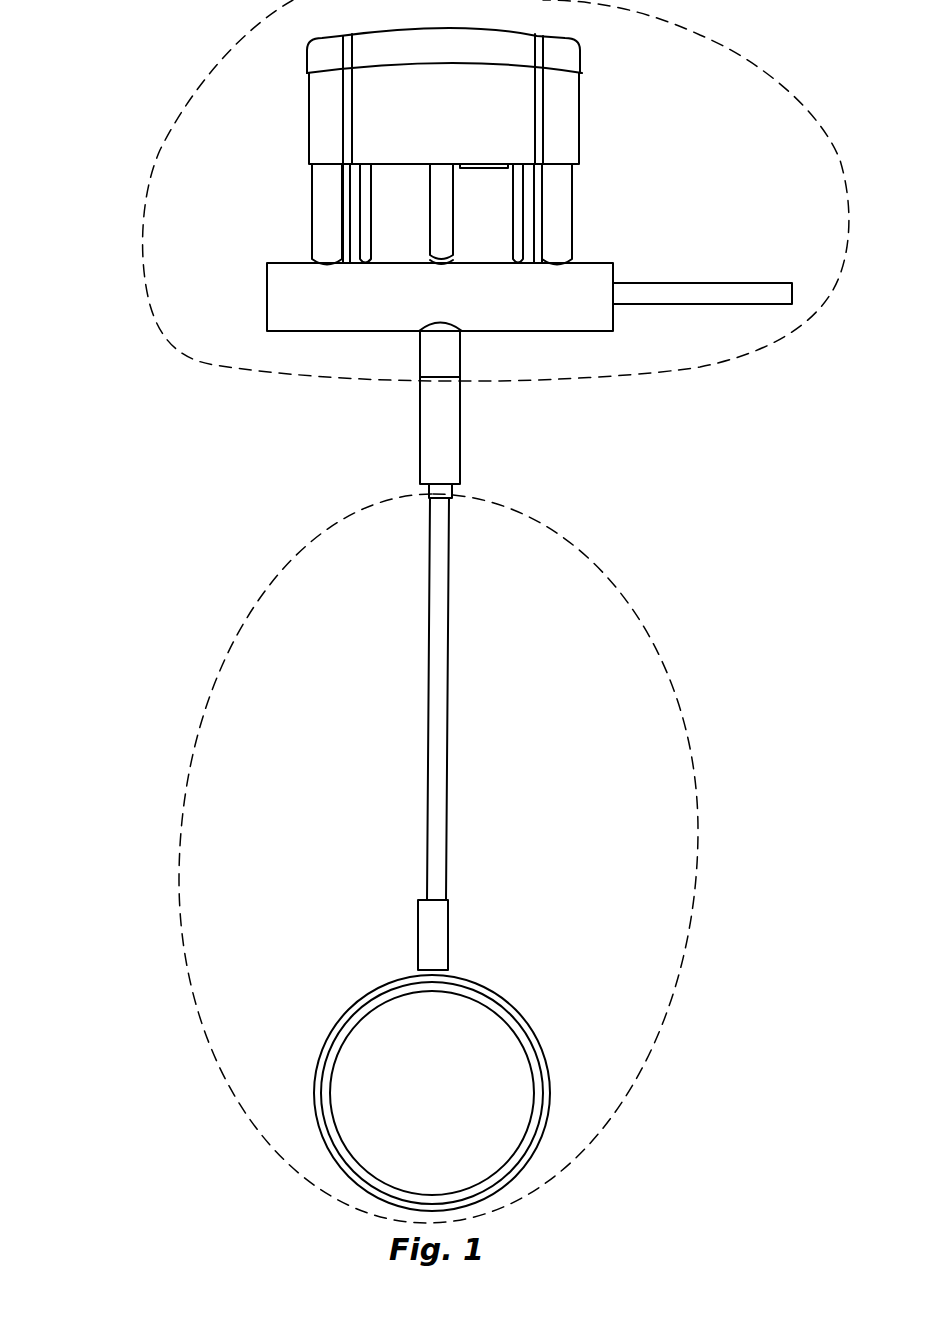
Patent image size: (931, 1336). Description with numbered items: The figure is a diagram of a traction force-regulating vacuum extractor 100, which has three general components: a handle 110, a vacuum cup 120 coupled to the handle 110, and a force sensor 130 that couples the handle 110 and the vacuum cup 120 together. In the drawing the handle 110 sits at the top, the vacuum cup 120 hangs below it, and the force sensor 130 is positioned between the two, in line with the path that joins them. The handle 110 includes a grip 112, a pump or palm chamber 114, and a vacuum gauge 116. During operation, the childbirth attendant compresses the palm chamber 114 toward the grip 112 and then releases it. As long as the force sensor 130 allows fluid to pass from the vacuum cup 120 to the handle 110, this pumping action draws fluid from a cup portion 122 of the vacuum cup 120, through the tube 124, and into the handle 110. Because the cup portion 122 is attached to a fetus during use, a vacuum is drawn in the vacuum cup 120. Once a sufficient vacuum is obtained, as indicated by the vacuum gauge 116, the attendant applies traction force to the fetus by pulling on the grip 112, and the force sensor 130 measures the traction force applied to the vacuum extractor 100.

The vacuum extractor 100 is at (212, 494).
The handle 110 is at (163, 128).
The grip 112 is at (518, 311).
The pump (palm chamber) 114 is at (462, 131).
The vacuum gauge 116 is at (685, 283).
The vacuum cup 120 is at (693, 792).
The cup portion 122 is at (490, 980).
The tube 124 is at (446, 703).
The force sensor 130 is at (458, 441).